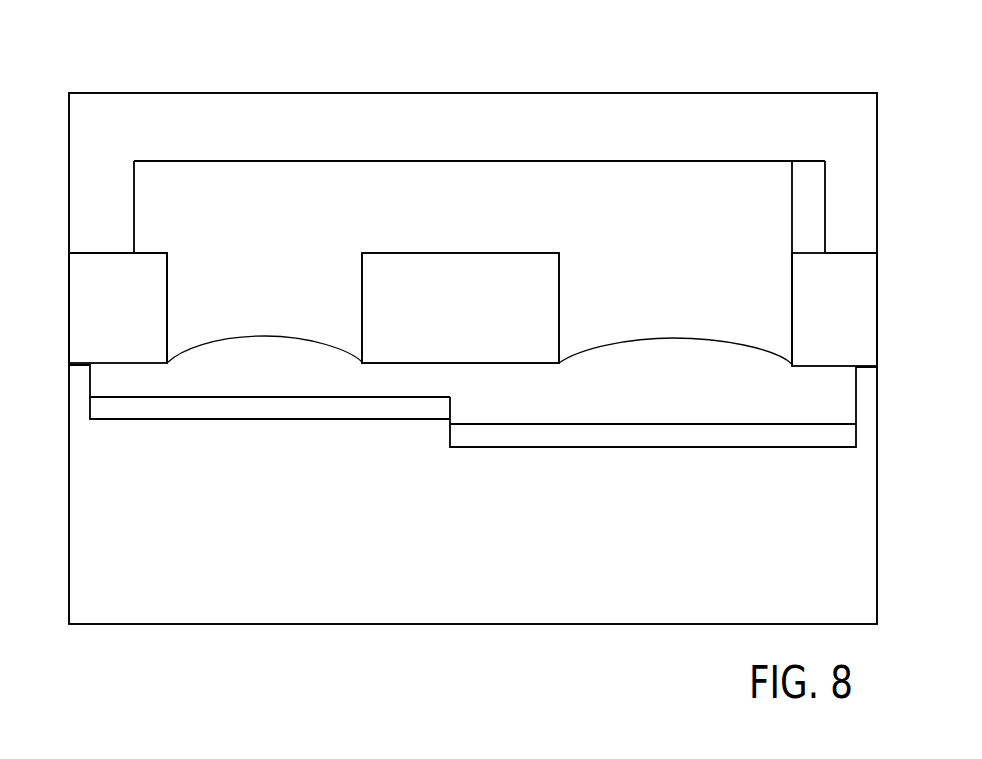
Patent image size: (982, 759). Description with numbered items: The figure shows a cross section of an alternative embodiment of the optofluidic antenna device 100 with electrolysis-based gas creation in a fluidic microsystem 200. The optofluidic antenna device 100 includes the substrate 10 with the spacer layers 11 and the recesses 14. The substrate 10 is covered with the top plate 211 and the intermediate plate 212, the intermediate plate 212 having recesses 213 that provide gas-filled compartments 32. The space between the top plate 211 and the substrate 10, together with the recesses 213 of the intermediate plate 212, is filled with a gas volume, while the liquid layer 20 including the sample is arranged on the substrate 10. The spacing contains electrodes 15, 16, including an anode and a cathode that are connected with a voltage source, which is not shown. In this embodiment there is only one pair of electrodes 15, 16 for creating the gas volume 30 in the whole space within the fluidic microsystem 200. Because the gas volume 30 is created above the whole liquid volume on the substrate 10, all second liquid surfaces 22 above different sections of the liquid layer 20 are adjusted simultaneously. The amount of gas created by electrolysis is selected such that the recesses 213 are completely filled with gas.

The optofluidic antenna device 100 is at (161, 48).
The fluidic microsystem 200 is at (473, 358).
The substrate 10 is at (158, 602).
The spacer layers 11 is at (212, 405).
The recesses 14 is at (375, 383).
The electrode 15 is at (155, 213).
The electrode 16 is at (808, 218).
The liquid layer 20 is at (275, 378).
The second liquid surfaces 22 is at (264, 331).
The gas volume 30 is at (615, 241).
The gas-filled compartments 32 is at (460, 308).
The top plate 211 is at (697, 115).
The intermediate plate 212 is at (845, 325).
The recesses 213 is at (578, 297).